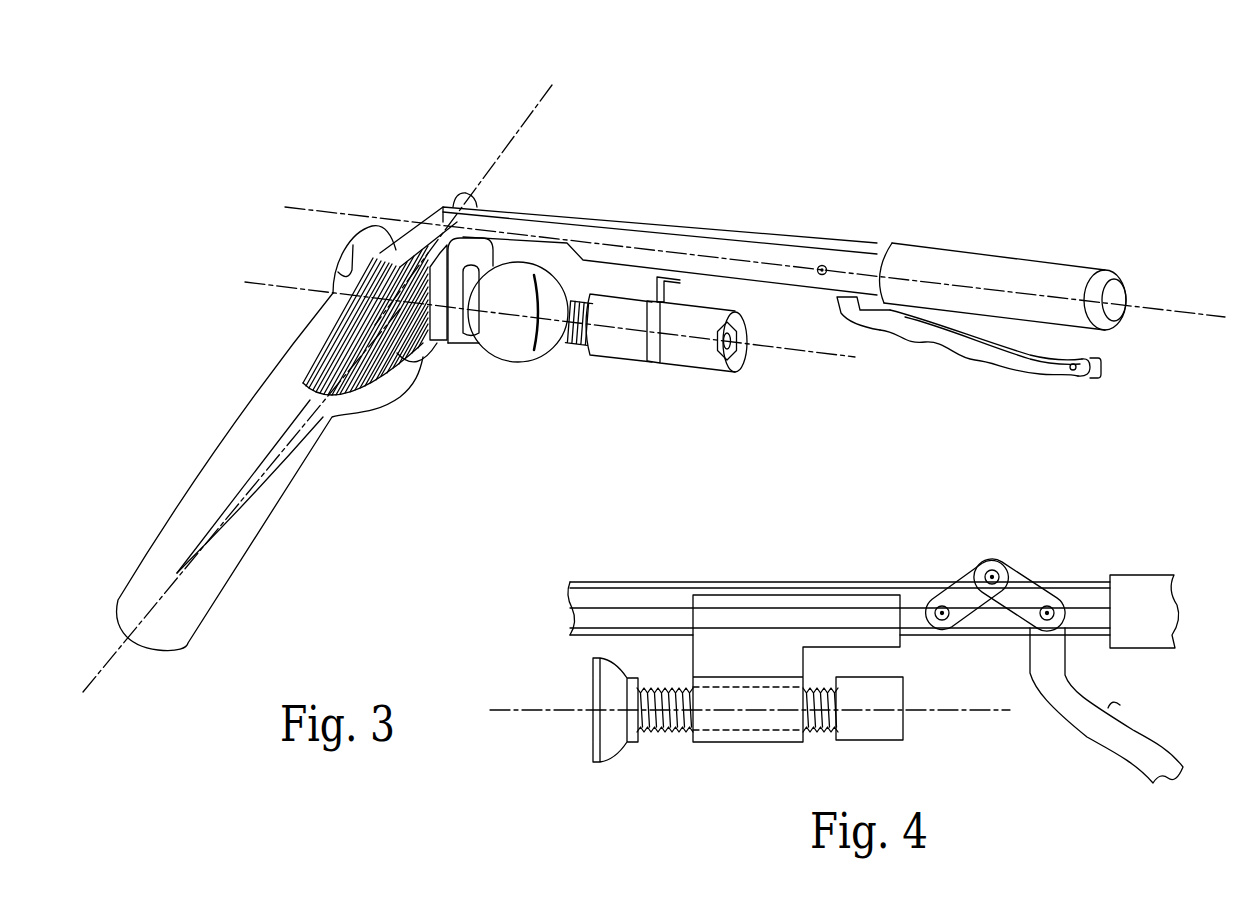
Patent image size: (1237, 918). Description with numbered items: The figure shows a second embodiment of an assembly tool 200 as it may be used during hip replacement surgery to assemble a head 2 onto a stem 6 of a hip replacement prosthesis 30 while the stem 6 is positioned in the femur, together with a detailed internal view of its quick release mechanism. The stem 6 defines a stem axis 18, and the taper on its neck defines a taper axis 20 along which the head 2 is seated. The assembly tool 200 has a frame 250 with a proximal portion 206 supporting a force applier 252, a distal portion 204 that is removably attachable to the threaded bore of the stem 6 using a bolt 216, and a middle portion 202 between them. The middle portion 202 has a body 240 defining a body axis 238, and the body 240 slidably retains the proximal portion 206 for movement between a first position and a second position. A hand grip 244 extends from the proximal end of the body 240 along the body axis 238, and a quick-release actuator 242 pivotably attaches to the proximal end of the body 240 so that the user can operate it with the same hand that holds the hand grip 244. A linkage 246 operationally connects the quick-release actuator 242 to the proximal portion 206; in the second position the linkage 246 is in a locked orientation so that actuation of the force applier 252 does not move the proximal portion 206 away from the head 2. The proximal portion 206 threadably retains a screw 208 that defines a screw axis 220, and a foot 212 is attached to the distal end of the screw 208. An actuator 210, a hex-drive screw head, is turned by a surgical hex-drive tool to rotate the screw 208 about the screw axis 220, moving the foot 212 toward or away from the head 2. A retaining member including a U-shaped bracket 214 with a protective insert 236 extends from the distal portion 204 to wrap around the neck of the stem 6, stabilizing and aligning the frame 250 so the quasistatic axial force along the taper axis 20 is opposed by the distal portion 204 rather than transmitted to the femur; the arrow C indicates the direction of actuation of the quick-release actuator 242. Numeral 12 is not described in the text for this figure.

In FIG. 3, the assembly tool 200 is at (238, 165).
In FIG. 3, the head 2 is at (500, 363).
In FIG. 3, the stem 6 is at (257, 503).
In FIG. 3, the handle 12 is at (303, 473).
In FIG. 3, the stem axis 18 is at (552, 96).
In FIG. 3, the taper axis 20 is at (562, 318).
In FIG. 4, the taper axis 20 is at (750, 681).
In FIG. 3, the screw axis 220 is at (275, 288).
In FIG. 4, the screw axis 220 is at (530, 710).
In FIG. 3, the hip replacement prosthesis 30 is at (237, 543).
In FIG. 3, the middle portion 202 is at (1146, 238).
In FIG. 3, the distal portion 204 is at (571, 176).
In FIG. 3, the proximal portion 206 is at (668, 430).
In FIG. 4, the proximal portion 206 is at (753, 742).
In FIG. 3, the screw 208 is at (577, 345).
In FIG. 4, the screw 208 is at (660, 733).
In FIG. 3, the actuator 210 is at (712, 365).
In FIG. 4, the actuator 210 is at (865, 740).
In FIG. 3, the foot 212 is at (553, 353).
In FIG. 4, the foot 212 is at (597, 762).
In FIG. 3, the bracket 214 is at (488, 238).
In FIG. 3, the bolt 216 is at (455, 200).
In FIG. 3, the protective insert 236 is at (450, 347).
In FIG. 3, the body axis 238 is at (320, 213).
In FIG. 3, the body 240 is at (663, 228).
In FIG. 4, the body 240 is at (633, 582).
In FIG. 3, the quick-release actuator 242 is at (1000, 367).
In FIG. 4, the quick-release actuator 242 is at (1085, 735).
In FIG. 3, the hand grip 244 is at (972, 253).
In FIG. 4, the hand grip 244 is at (1135, 575).
In FIG. 4, the linkage 246 is at (1000, 559).
In FIG. 3, the frame 250 is at (762, 238).
In FIG. 3, the force applier 252 is at (622, 355).
In FIG. 4, the direction of actuation C is at (1123, 701).